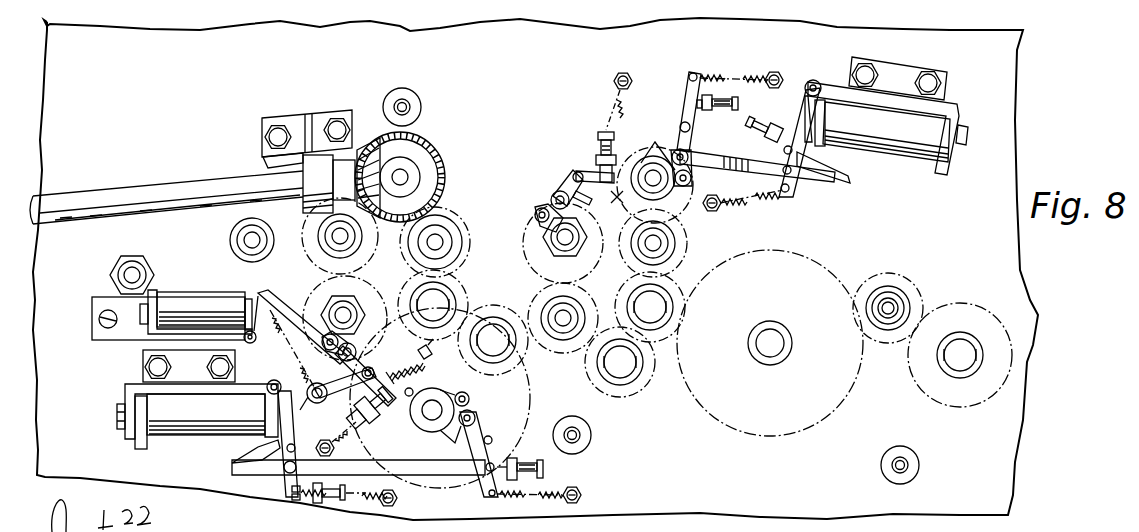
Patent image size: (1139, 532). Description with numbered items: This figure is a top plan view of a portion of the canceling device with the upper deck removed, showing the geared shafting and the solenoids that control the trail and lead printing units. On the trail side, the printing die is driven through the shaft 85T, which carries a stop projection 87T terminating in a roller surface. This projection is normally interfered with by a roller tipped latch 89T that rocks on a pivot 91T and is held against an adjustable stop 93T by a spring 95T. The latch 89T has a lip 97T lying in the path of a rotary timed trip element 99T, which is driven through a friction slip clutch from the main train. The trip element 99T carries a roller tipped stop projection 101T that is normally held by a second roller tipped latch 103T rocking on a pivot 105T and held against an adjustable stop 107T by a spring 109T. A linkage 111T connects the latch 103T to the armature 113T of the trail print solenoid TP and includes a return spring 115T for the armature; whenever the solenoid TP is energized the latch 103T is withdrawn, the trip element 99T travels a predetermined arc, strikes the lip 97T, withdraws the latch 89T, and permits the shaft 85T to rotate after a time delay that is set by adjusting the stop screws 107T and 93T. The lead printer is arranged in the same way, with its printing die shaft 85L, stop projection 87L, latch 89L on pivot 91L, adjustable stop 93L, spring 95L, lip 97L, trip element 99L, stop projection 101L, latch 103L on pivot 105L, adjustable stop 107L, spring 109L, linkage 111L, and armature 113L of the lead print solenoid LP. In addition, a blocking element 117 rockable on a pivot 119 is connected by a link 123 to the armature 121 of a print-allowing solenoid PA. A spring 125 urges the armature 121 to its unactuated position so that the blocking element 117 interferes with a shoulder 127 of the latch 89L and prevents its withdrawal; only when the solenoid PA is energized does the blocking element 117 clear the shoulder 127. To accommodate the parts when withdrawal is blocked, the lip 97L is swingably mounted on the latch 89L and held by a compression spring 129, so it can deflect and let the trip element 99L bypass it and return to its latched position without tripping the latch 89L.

The trail print solenoid TP is at (884, 148).
The print-allowing solenoid PA is at (203, 302).
The lead print solenoid LP is at (208, 424).
The shaft 85T is at (548, 243).
The stop projection 87T is at (534, 214).
The roller tipped latch 89T is at (558, 190).
The pivot 91T is at (578, 170).
The adjustable stop 93T is at (602, 132).
The spring 95T is at (614, 96).
The lip 97T is at (634, 226).
The rotary timed trip element 99T is at (661, 141).
The stop projection 101T is at (692, 180).
The roller tipped latch 103T is at (688, 147).
The pivot 105T is at (691, 127).
The adjustable stop 107T is at (738, 104).
The spring 109T is at (723, 72).
The linkage 111T is at (809, 187).
The armature 113T is at (811, 80).
The return spring 115T is at (758, 207).
The armature 121 is at (262, 295).
The link 123 is at (268, 290).
The spring 125 is at (292, 358).
The shoulder 127 is at (402, 369).
The compression spring 129 is at (430, 356).
The armature 113L is at (271, 382).
The blocking element 117 is at (357, 380).
The pivot 119 is at (312, 399).
The printing die shaft 85L is at (355, 298).
The stop projection 87L is at (327, 334).
The roller tipped latch 89L is at (358, 352).
The pivot 91L is at (362, 392).
The adjustable stop 93L is at (366, 424).
The spring 95L is at (336, 440).
The lip 97L is at (413, 392).
The rotary timed trip element 99L is at (452, 443).
The stop projection 101L is at (470, 398).
The roller tipped latch 103L is at (476, 417).
The pivot 105L is at (494, 441).
The adjustable stop 107L is at (545, 468).
The spring 109L is at (524, 500).
The linkage 111L is at (266, 495).